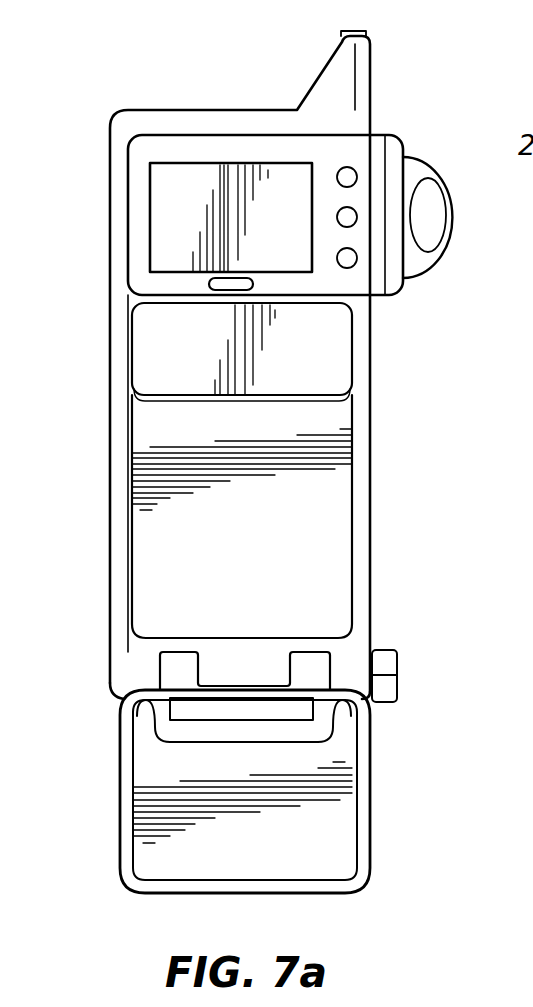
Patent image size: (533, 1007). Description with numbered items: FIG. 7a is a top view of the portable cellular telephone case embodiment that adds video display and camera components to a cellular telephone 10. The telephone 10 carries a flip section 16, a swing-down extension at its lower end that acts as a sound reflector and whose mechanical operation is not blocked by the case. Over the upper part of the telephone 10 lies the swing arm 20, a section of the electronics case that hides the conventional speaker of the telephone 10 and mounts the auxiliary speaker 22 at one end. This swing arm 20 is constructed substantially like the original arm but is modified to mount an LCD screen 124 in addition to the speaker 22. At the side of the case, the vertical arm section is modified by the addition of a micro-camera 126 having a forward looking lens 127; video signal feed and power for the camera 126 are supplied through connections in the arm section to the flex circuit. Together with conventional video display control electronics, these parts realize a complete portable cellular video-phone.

The cellular telephone 10 is at (378, 437).
The swing arm 20 is at (360, 155).
The LCD screen 124 is at (165, 215).
The auxiliary speaker 22 is at (228, 291).
The micro-camera 126 is at (410, 263).
The forward looking lens 127 is at (438, 218).
The flip section 16 is at (318, 825).